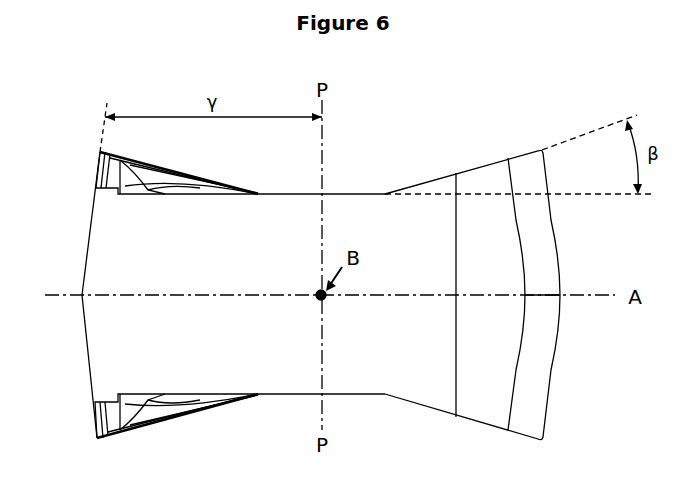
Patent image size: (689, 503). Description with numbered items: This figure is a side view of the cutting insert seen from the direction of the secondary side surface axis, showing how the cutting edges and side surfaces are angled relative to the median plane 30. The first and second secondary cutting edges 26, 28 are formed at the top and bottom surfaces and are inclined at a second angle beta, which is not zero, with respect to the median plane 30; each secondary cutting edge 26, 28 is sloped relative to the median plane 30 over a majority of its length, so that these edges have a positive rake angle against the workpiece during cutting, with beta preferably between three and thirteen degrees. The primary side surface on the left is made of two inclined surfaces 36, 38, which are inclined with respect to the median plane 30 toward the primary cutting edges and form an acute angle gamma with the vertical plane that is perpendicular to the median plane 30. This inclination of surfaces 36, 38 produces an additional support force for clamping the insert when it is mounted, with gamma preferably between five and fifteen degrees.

The first secondary cutting edge 26 is at (158, 165).
The second secondary cutting edge 28 is at (478, 166).
The median plane 30 is at (52, 287).
The inclined surface 36 is at (88, 244).
The inclined surface 38 is at (87, 345).